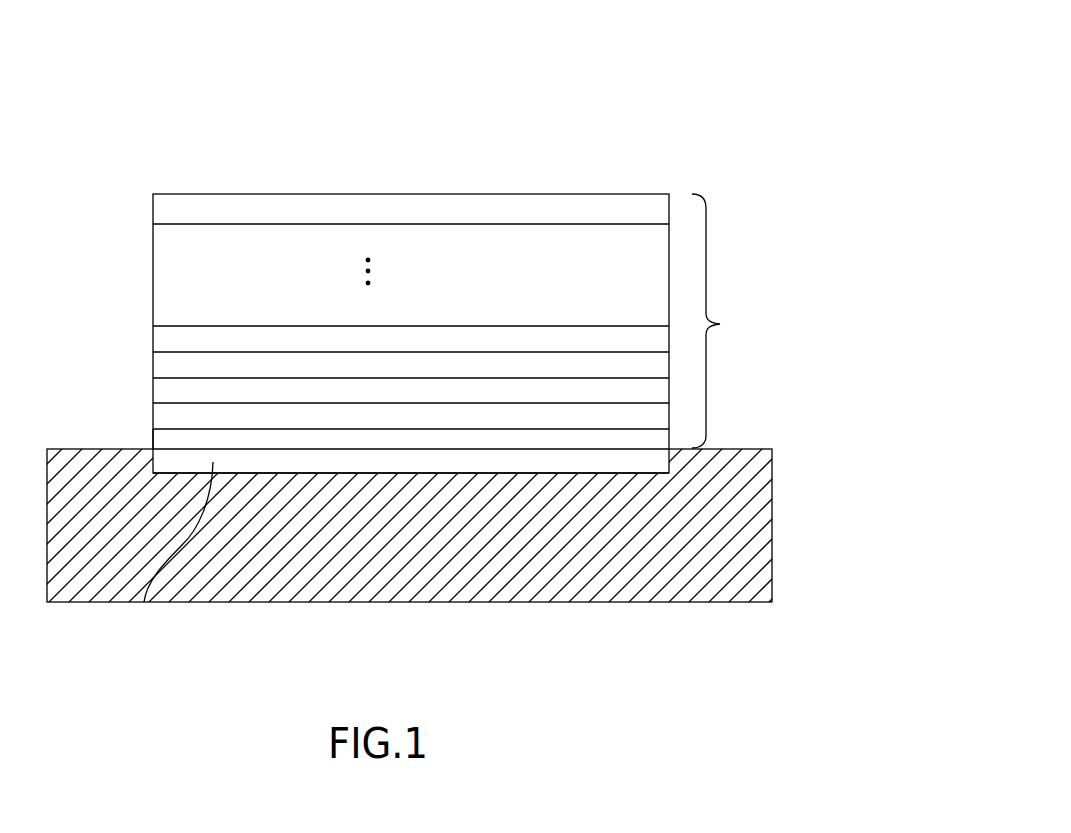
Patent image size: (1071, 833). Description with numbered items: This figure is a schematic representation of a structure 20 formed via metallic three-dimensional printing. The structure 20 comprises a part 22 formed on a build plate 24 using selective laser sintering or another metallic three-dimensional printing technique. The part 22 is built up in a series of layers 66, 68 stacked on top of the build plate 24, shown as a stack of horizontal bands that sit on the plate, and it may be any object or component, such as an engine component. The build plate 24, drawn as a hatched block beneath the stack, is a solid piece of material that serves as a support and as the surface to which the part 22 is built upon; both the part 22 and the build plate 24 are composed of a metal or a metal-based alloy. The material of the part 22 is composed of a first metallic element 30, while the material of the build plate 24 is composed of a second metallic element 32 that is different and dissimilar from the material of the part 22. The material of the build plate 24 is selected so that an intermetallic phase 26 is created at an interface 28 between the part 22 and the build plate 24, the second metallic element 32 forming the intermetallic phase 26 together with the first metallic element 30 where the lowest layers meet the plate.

The structure 20 is at (634, 78).
The part 22 is at (153, 262).
The build plate 24 is at (772, 518).
The intermetallic phase 26 is at (144, 602).
The interface 28 is at (146, 437).
The first metallic element 30 is at (428, 275).
The second metallic element 32 is at (428, 549).
The layer 66 is at (658, 462).
The layer 68 is at (721, 321).